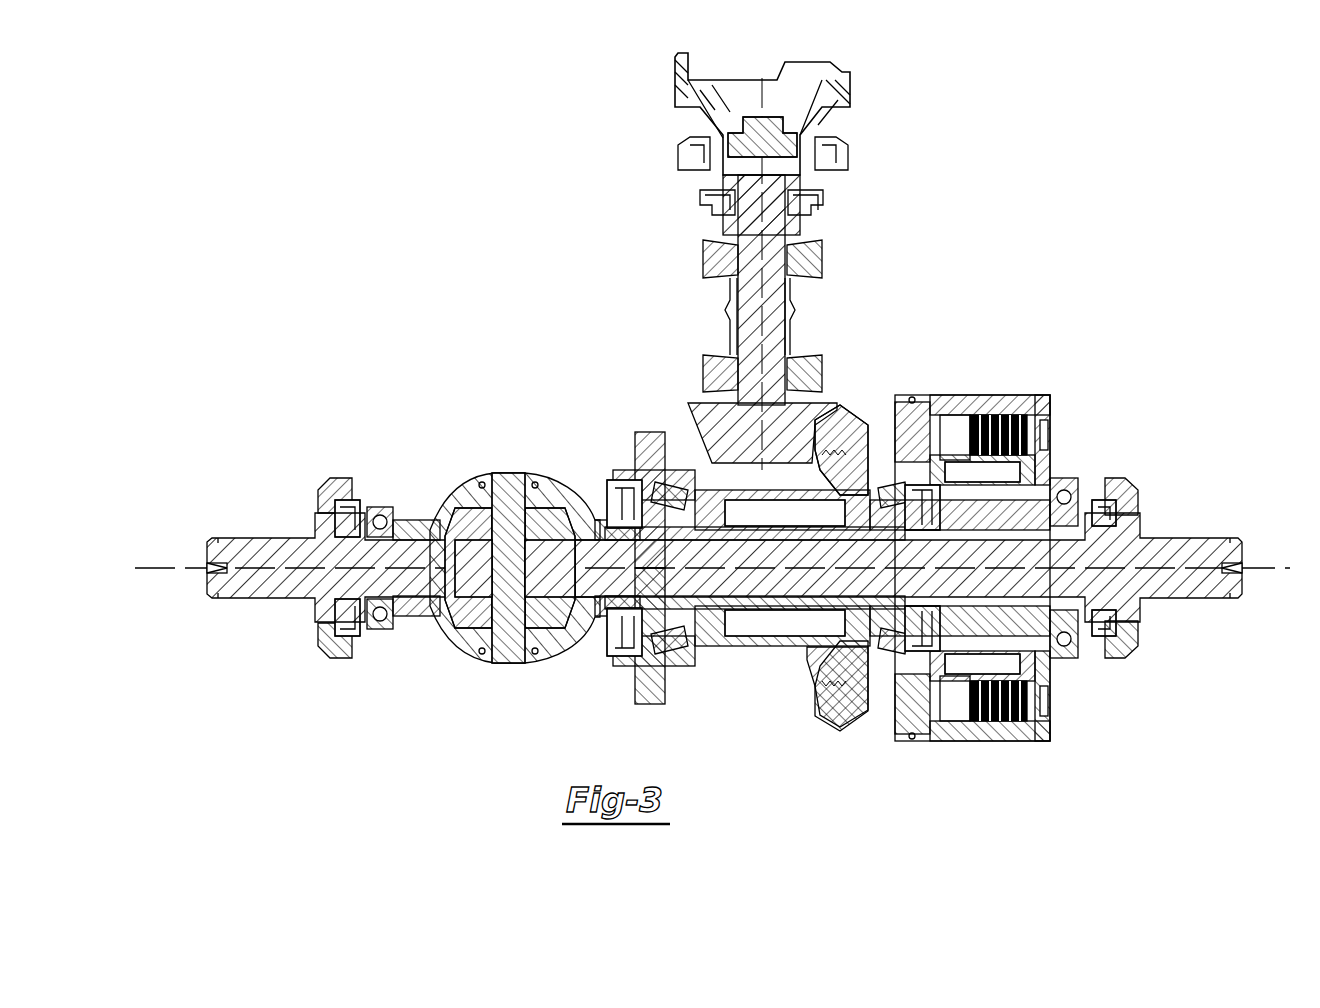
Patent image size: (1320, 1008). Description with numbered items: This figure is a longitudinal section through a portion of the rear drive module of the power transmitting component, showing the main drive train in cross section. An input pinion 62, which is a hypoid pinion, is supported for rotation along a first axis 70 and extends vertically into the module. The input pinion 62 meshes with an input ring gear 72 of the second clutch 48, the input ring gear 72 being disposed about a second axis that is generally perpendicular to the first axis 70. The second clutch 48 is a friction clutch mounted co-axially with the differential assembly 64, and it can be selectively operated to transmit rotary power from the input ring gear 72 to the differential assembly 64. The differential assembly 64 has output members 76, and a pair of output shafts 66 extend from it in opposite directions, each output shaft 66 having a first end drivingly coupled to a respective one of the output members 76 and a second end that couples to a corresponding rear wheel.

The second clutch 48 is at (1034, 416).
The input pinion 62 is at (800, 198).
The differential assembly 64 is at (501, 550).
The output shafts 66 is at (243, 538).
The first axis 70 is at (765, 310).
The input ring gear 72 is at (848, 423).
The output members 76 is at (546, 522).